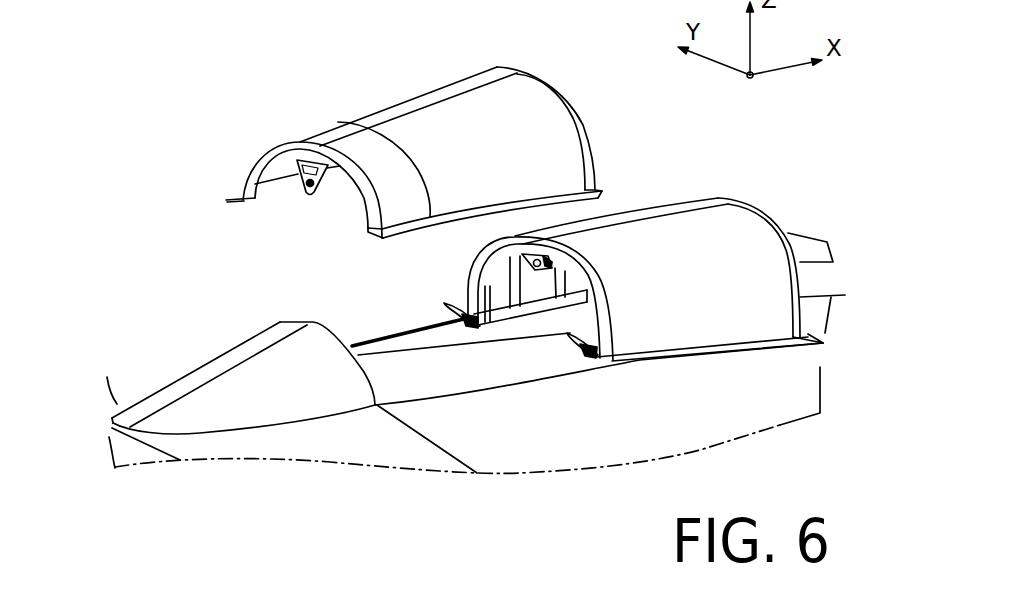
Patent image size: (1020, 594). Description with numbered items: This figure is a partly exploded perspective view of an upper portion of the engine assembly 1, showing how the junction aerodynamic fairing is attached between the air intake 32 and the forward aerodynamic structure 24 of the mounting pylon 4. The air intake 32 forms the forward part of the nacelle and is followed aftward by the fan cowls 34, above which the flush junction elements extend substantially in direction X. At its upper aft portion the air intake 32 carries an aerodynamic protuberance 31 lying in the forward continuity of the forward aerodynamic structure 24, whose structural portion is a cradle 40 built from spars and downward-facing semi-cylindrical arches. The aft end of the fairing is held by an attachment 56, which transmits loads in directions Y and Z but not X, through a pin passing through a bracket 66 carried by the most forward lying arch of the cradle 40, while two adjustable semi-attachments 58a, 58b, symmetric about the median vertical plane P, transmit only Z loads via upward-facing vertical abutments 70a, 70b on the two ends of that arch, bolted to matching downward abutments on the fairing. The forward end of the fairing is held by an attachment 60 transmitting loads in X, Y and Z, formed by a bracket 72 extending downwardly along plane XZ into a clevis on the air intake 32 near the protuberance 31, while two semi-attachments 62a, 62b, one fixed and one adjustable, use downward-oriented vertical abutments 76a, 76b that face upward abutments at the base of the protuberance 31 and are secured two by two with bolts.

The engine assembly 1 is at (130, 88).
The mounting pylon 4 is at (820, 243).
The forward aerodynamic structure 24 is at (665, 200).
The aerodynamic protuberance 31 is at (213, 397).
The air intake 32 is at (387, 448).
The fan cowl 34 is at (742, 400).
The cradle 40 is at (522, 249).
The attachment 56 is at (447, 275).
The bracket 66 is at (522, 255).
The adjustable semi-attachment 58a is at (617, 512).
The adjustable semi-attachment 58b is at (508, 526).
The vertical abutment 70a is at (598, 495).
The vertical abutment 70b is at (487, 505).
The attachment 60 is at (250, 157).
The bracket 72 is at (310, 183).
The semi-attachment 62a is at (286, 239).
The semi-attachment 62b is at (151, 214).
The vertical abutment 76a is at (370, 234).
The vertical abutment 76b is at (243, 200).